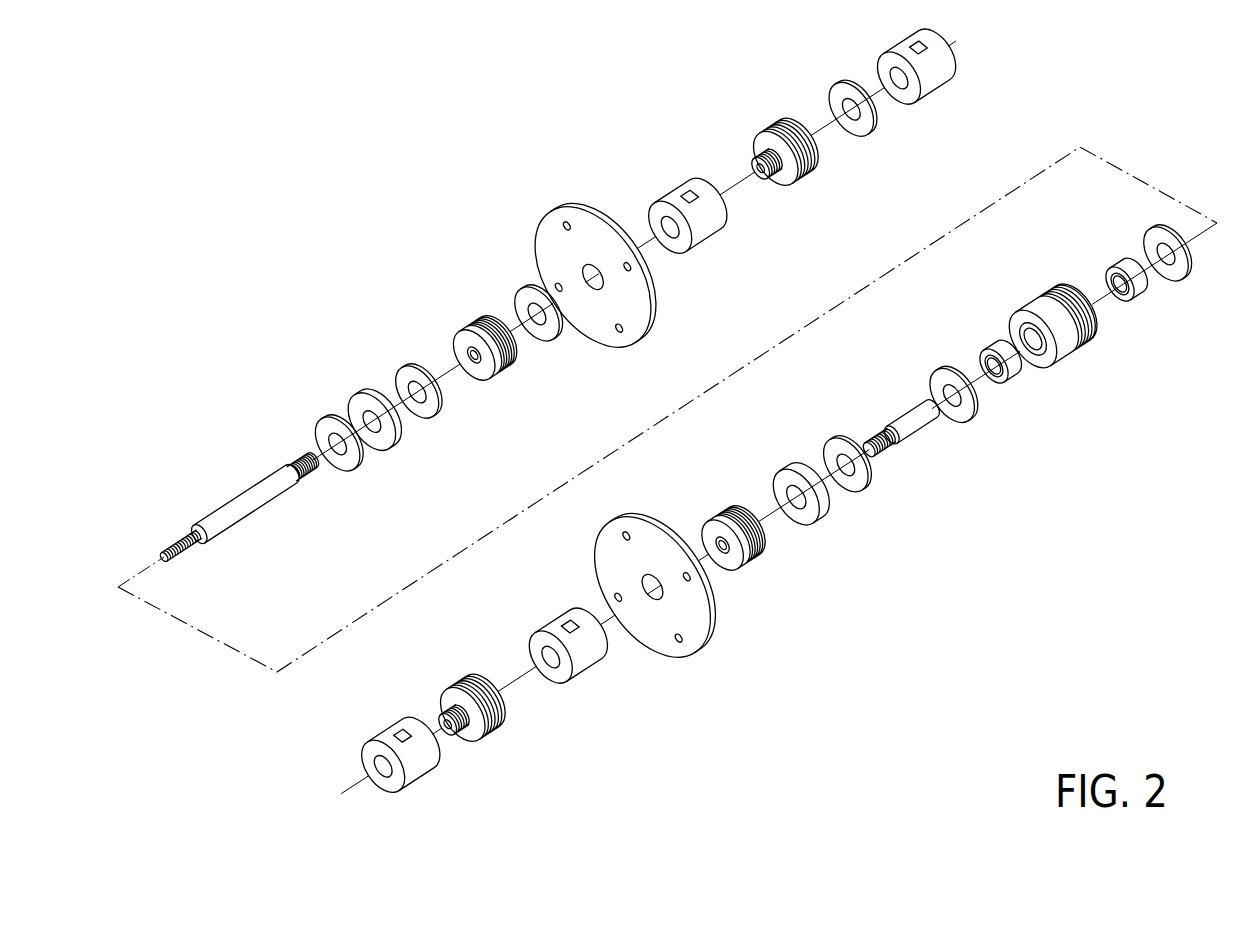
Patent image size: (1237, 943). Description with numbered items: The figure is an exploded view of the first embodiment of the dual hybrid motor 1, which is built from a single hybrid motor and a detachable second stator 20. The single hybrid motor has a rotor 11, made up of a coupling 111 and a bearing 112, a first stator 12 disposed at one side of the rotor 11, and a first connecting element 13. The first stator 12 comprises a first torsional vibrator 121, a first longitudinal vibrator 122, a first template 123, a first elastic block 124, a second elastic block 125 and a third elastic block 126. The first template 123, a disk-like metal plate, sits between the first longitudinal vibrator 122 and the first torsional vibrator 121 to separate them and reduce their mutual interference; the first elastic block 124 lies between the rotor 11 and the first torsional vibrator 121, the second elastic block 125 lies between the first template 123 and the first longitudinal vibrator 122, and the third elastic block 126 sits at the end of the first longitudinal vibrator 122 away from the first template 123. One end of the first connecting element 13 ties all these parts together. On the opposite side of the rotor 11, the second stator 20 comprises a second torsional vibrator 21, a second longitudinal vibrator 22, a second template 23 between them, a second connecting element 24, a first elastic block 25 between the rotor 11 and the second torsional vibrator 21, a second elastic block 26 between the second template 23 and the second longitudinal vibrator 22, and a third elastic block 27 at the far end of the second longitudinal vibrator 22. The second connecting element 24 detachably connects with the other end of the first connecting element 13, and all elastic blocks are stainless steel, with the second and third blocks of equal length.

The dual hybrid motor 1 is at (201, 155).
The rotor 11 is at (1183, 345).
The coupling 111 is at (1102, 320).
The bearing 112 is at (1015, 364).
The first stator 12 is at (825, 10).
The first torsional vibrator 121 is at (473, 322).
The first longitudinal vibrator 122 is at (777, 118).
The first template 123 is at (553, 227).
The first elastic block 124 is at (370, 385).
The second elastic block 125 is at (673, 187).
The third elastic block 126 is at (873, 75).
The first connecting element 13 is at (253, 505).
The second stator 20 is at (1006, 507).
The second torsional vibrator 21 is at (762, 558).
The second longitudinal vibrator 22 is at (500, 727).
The second template 23 is at (690, 625).
The second connecting element 24 is at (905, 432).
The first elastic block 25 is at (827, 505).
The second elastic block 26 is at (588, 647).
The third elastic block 27 is at (412, 752).